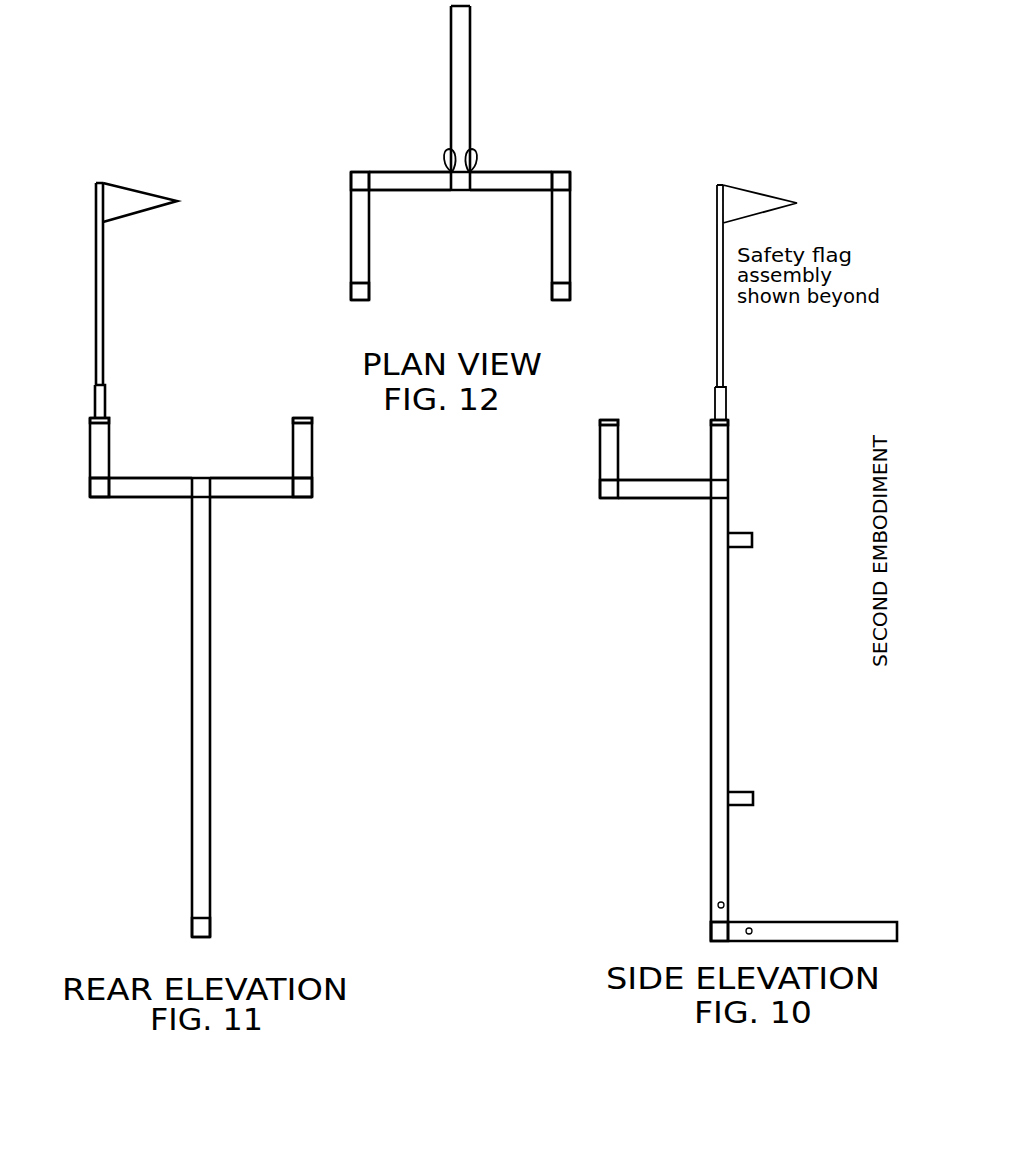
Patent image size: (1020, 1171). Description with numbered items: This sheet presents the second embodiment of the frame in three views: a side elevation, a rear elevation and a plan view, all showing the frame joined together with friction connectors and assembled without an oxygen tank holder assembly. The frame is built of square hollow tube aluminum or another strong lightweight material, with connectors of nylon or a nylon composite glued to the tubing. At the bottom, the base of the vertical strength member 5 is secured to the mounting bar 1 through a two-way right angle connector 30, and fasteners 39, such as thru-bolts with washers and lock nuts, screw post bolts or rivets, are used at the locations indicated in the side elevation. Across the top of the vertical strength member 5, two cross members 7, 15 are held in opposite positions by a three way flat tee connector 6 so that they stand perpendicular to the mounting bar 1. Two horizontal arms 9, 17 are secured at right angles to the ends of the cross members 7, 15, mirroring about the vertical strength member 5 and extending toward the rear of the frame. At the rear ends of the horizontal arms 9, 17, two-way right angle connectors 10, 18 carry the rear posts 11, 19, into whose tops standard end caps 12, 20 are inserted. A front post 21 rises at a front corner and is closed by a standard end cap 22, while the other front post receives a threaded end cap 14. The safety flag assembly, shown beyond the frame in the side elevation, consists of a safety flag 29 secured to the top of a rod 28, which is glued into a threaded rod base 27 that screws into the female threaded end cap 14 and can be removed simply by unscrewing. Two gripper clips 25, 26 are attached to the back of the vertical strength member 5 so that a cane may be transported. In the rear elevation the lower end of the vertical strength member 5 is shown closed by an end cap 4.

In FIG. 12, the mounting bar 1 is at (472, 53).
In FIG. 10, the mounting bar 1 is at (782, 921).
In FIG. 11, the post end cap 4 is at (212, 927).
In FIG. 11, the vertical strength member 5 is at (212, 653).
In FIG. 10, the vertical strength member 5 is at (730, 604).
In FIG. 12, the three way flat tee connector 6 is at (462, 192).
In FIG. 11, the three way flat tee connector 6 is at (205, 477).
In FIG. 10, the three way flat tee connector 6 is at (730, 488).
In FIG. 12, the cross member 7 is at (413, 192).
In FIG. 11, the cross member 7 is at (135, 499).
In FIG. 12, the horizontal arm 9 is at (349, 226).
In FIG. 11, the two-way right angle connector 10 is at (90, 499).
In FIG. 11, the rear post 11 is at (110, 447).
In FIG. 12, the end cap 12 is at (350, 301).
In FIG. 11, the end cap 12 is at (110, 417).
In FIG. 12, the threaded end cap 14 is at (350, 171).
In FIG. 12, the cross member 15 is at (495, 170).
In FIG. 11, the cross member 15 is at (252, 499).
In FIG. 12, the horizontal arm 17 is at (572, 228).
In FIG. 10, the horizontal arm 17 is at (662, 499).
In FIG. 11, the two-way right angle connector 18 is at (313, 490).
In FIG. 10, the two-way right angle connector 18 is at (599, 499).
In FIG. 11, the rear post 19 is at (292, 447).
In FIG. 10, the rear post 19 is at (598, 463).
In FIG. 12, the end cap 20 is at (572, 297).
In FIG. 11, the end cap 20 is at (297, 412).
In FIG. 10, the end cap 20 is at (609, 418).
In FIG. 10, the front post 21 is at (730, 453).
In FIG. 12, the end cap 22 is at (571, 172).
In FIG. 10, the end cap 22 is at (729, 419).
In FIG. 12, the gripper clip 25 is at (443, 157).
In FIG. 10, the gripper clip 25 is at (753, 532).
In FIG. 10, the gripper clip 26 is at (754, 791).
In FIG. 11, the threaded rod base 27 is at (94, 398).
In FIG. 11, the rod 28 is at (95, 307).
In FIG. 11, the safety flag 29 is at (138, 219).
In FIG. 10, the two-way right angle connector 30 is at (709, 928).
In FIG. 10, the fasteners 39 is at (750, 927).